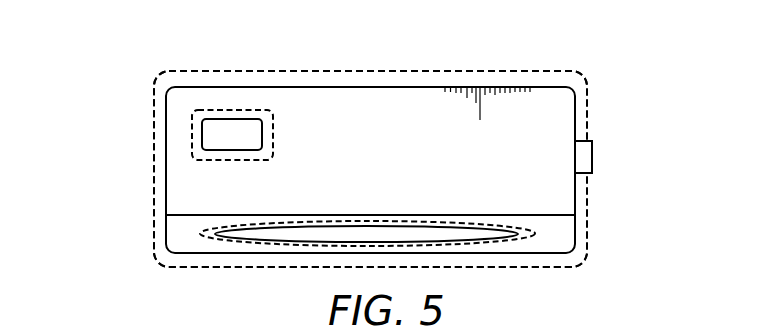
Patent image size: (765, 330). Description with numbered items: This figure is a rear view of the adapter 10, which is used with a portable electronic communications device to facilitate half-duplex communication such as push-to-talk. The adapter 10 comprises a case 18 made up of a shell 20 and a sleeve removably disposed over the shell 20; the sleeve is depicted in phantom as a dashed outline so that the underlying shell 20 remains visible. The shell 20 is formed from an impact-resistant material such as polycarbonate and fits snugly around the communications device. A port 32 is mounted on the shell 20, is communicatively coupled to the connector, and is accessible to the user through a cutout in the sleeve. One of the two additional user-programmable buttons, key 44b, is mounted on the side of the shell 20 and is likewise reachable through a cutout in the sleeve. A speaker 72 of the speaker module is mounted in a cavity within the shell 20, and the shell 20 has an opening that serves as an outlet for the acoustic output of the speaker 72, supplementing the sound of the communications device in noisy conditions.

The adapter 10 is at (128, 68).
The case 18 is at (533, 66).
The shell 20 is at (382, 106).
The port 32 is at (248, 137).
The key 44b is at (583, 155).
The speaker 72 is at (418, 237).